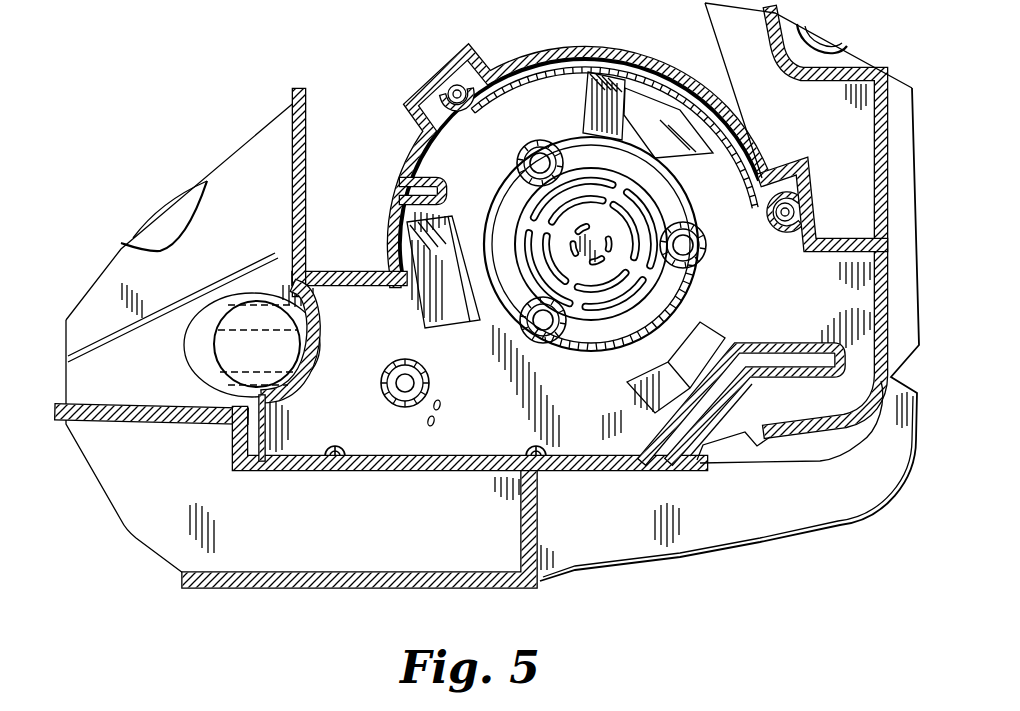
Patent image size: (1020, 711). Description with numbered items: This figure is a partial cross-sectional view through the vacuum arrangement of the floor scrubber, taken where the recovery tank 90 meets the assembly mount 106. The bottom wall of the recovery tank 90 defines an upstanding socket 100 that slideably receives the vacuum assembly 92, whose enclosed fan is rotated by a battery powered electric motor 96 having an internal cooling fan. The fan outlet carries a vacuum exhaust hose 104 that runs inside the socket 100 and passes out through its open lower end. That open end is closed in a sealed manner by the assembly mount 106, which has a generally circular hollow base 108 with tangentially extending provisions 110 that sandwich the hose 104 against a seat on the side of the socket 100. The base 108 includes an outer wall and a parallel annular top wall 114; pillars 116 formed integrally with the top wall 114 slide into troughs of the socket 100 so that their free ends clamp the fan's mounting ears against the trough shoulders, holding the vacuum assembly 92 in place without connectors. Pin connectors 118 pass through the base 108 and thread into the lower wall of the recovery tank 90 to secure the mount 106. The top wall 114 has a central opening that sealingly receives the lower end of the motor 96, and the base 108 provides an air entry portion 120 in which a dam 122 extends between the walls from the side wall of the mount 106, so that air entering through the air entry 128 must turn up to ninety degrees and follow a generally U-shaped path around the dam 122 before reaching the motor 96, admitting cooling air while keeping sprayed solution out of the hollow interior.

The recovery tank 90 is at (252, 183).
The vacuum assembly 92 is at (682, 213).
The electric motor 96 is at (553, 213).
The socket 100 is at (581, 48).
The vacuum exhaust hose 104 is at (246, 351).
The assembly mount 106 is at (893, 298).
The base 108 is at (925, 340).
The provisions 110 is at (245, 443).
The top wall 114 is at (802, 298).
The pillars 116 is at (598, 101).
The pin connectors 118 is at (440, 88).
The air entry portion 120 is at (821, 432).
The dam 122 is at (822, 378).
The air entry 128 is at (747, 430).